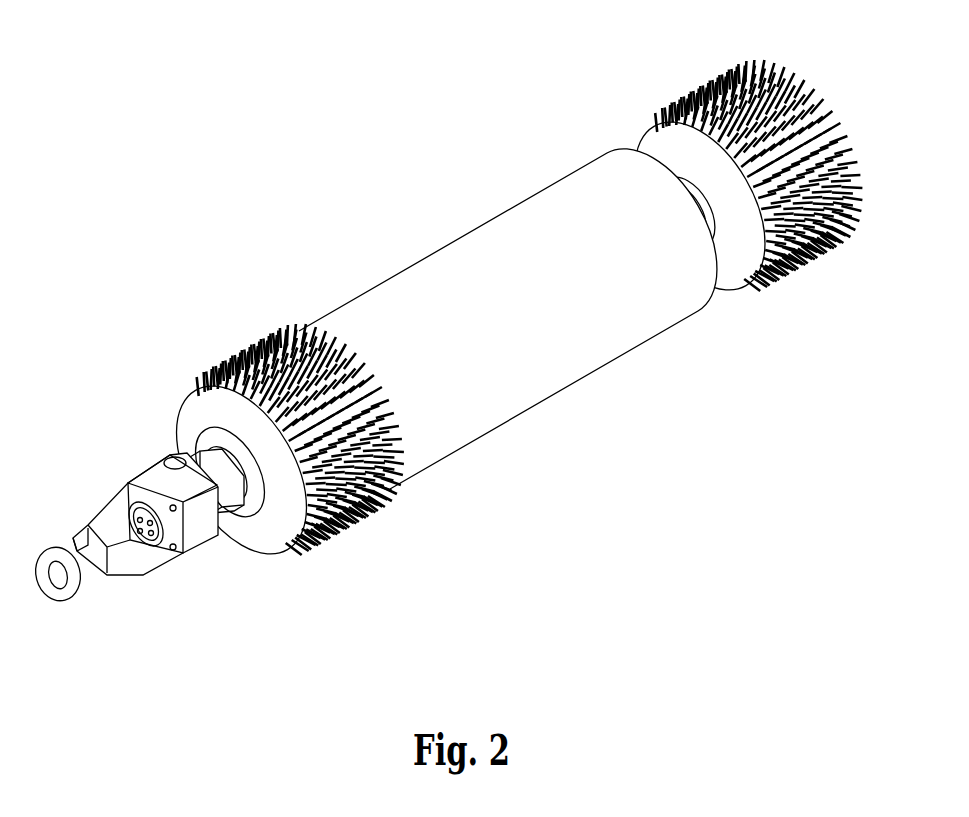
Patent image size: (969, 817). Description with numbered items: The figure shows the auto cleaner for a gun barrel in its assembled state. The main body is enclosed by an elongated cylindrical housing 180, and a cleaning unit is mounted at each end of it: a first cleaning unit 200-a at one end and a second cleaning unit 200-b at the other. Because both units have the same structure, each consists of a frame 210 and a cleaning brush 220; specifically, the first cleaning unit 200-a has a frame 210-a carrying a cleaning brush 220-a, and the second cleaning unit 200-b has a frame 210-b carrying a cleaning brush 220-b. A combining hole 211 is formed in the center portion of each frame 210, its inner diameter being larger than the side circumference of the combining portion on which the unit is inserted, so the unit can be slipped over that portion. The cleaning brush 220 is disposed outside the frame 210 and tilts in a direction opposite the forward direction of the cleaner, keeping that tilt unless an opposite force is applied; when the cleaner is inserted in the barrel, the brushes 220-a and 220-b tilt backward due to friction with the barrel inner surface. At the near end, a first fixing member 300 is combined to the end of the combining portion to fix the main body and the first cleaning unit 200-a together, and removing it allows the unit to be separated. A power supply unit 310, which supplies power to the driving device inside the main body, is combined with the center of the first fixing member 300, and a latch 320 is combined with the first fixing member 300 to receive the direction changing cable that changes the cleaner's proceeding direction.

The housing 180 is at (570, 380).
The first cleaning unit 200-a is at (291, 402).
The second cleaning unit 200-b is at (588, 305).
The frame 210 is at (693, 520).
The frame of first cleaning unit 210-a is at (340, 505).
The frame of second cleaning unit 210-b is at (748, 236).
The combining hole 211 is at (760, 263).
The cleaning brush 220 is at (693, 555).
The cleaning brush of first cleaning unit 220-a is at (290, 332).
The cleaning brush of second cleaning unit 220-b is at (793, 123).
The first fixing member 300 is at (150, 517).
The power supply unit 310 is at (163, 525).
The latch 320 is at (63, 582).